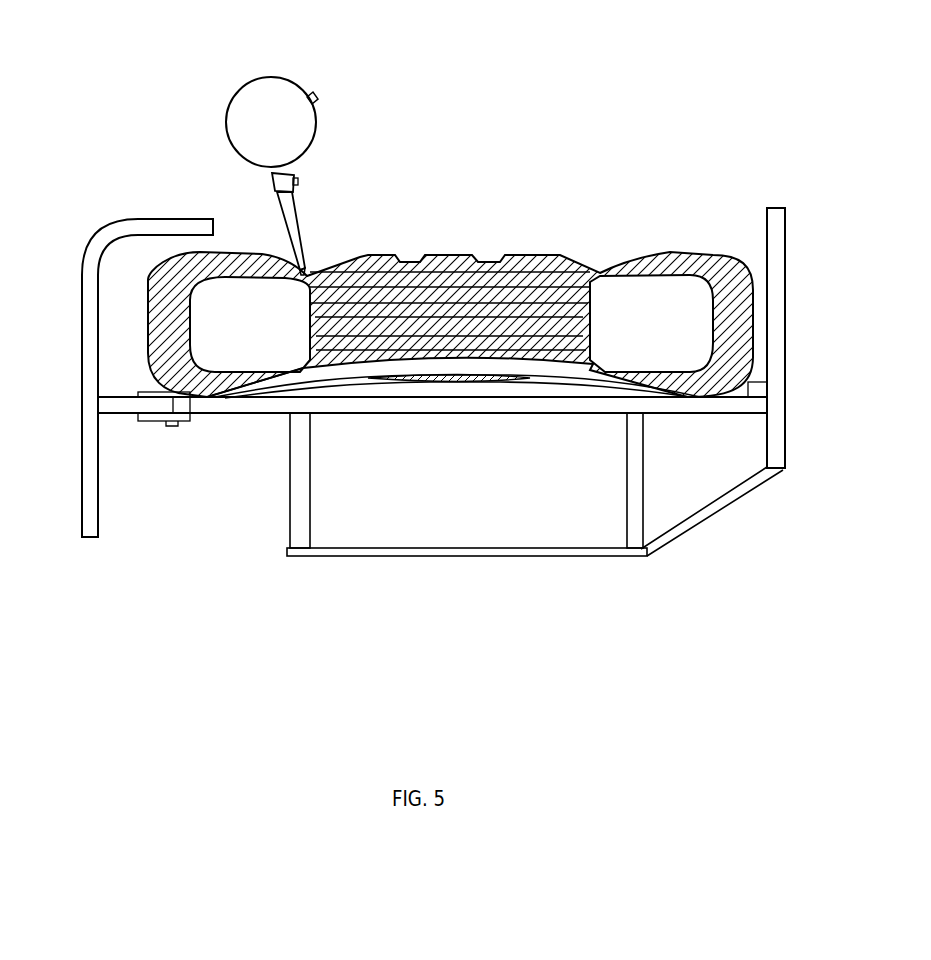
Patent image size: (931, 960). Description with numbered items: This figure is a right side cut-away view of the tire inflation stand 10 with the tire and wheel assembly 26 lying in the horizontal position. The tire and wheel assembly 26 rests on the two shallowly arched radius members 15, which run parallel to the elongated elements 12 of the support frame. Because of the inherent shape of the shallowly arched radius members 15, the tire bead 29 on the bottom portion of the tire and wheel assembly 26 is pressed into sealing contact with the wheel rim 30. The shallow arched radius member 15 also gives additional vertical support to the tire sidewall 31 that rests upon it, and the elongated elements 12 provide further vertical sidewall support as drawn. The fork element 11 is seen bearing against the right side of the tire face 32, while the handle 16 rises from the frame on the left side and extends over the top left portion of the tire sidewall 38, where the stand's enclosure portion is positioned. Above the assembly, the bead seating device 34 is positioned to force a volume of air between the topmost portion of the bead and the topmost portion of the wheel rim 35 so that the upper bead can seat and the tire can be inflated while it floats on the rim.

The tire inflation stand 10 is at (426, 396).
The fork element 11 is at (775, 208).
The elongated element 12 is at (278, 407).
The shallowly arched radius member 15 is at (403, 362).
The handle 16 is at (88, 307).
The tire and wheel assembly 26 is at (465, 370).
The tire bead 29 is at (283, 373).
The wheel rim 30 is at (467, 380).
The tire sidewall 31 is at (197, 377).
The tire face 32 is at (703, 270).
The bead seating device 34 is at (279, 146).
The wheel rim top portion 35 is at (308, 272).
The tire sidewall 38 is at (202, 272).